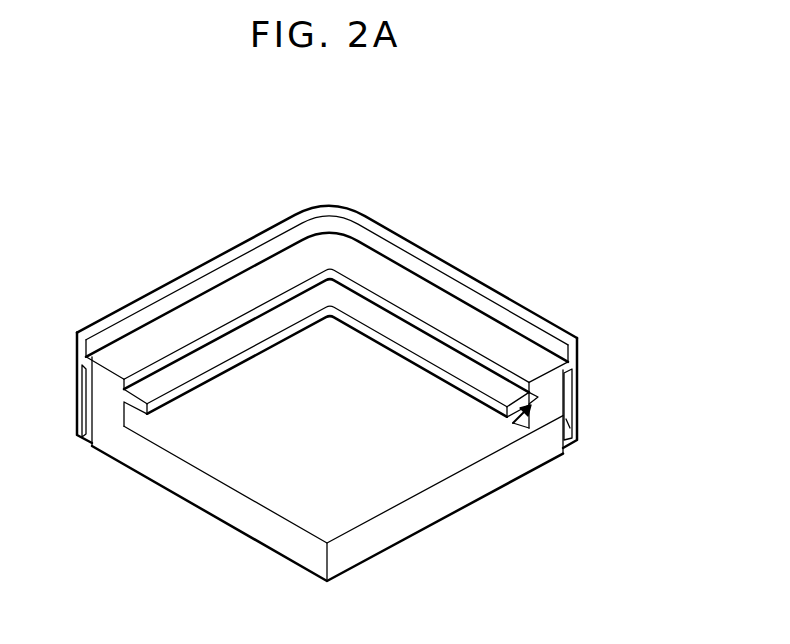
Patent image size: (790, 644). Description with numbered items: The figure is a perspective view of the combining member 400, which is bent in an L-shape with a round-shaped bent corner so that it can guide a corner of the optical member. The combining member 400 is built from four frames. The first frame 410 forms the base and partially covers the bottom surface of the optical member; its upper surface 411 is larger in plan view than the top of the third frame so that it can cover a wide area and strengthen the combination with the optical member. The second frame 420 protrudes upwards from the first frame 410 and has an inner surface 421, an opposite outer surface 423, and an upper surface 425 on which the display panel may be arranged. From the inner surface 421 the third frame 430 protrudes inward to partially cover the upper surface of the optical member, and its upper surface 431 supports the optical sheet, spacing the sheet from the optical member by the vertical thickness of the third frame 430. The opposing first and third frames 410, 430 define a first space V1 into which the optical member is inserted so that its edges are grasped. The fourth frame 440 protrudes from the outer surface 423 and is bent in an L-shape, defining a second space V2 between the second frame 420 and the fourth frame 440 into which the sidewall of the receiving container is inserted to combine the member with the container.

The combining member 400 is at (183, 212).
The first frame 410 is at (440, 497).
The upper surface of the first frame 411 is at (362, 490).
The second frame 420 is at (553, 402).
The inner surface of the second frame 421 is at (532, 414).
The outer surface of the second frame 423 is at (574, 391).
The upper surface of the second frame 425 is at (497, 342).
The third frame 430 is at (538, 404).
The upper surface of the third frame 431 is at (412, 338).
The fourth frame 440 is at (580, 373).
The first space V1 is at (528, 430).
The second space V2 is at (570, 424).